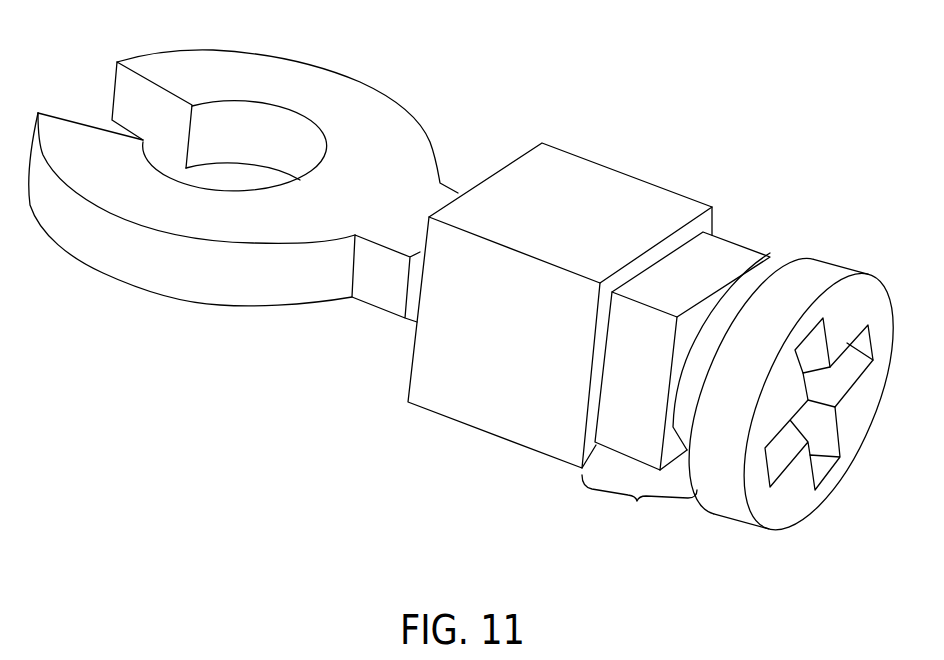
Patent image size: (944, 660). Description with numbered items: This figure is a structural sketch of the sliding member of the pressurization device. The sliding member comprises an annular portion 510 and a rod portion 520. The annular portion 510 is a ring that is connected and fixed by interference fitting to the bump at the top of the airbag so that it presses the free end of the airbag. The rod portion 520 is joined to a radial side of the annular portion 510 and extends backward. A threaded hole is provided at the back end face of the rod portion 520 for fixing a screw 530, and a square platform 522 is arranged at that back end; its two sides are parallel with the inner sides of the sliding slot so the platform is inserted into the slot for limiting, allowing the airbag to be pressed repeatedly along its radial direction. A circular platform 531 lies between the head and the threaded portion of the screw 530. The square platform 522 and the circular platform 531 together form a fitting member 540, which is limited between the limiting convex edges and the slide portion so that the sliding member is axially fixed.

The annular portion 510 is at (320, 93).
The rod portion 520 is at (580, 180).
The square platform 522 is at (700, 267).
The circular platform 531 is at (705, 330).
The screw 530 is at (810, 277).
The fitting member 540 is at (639, 507).